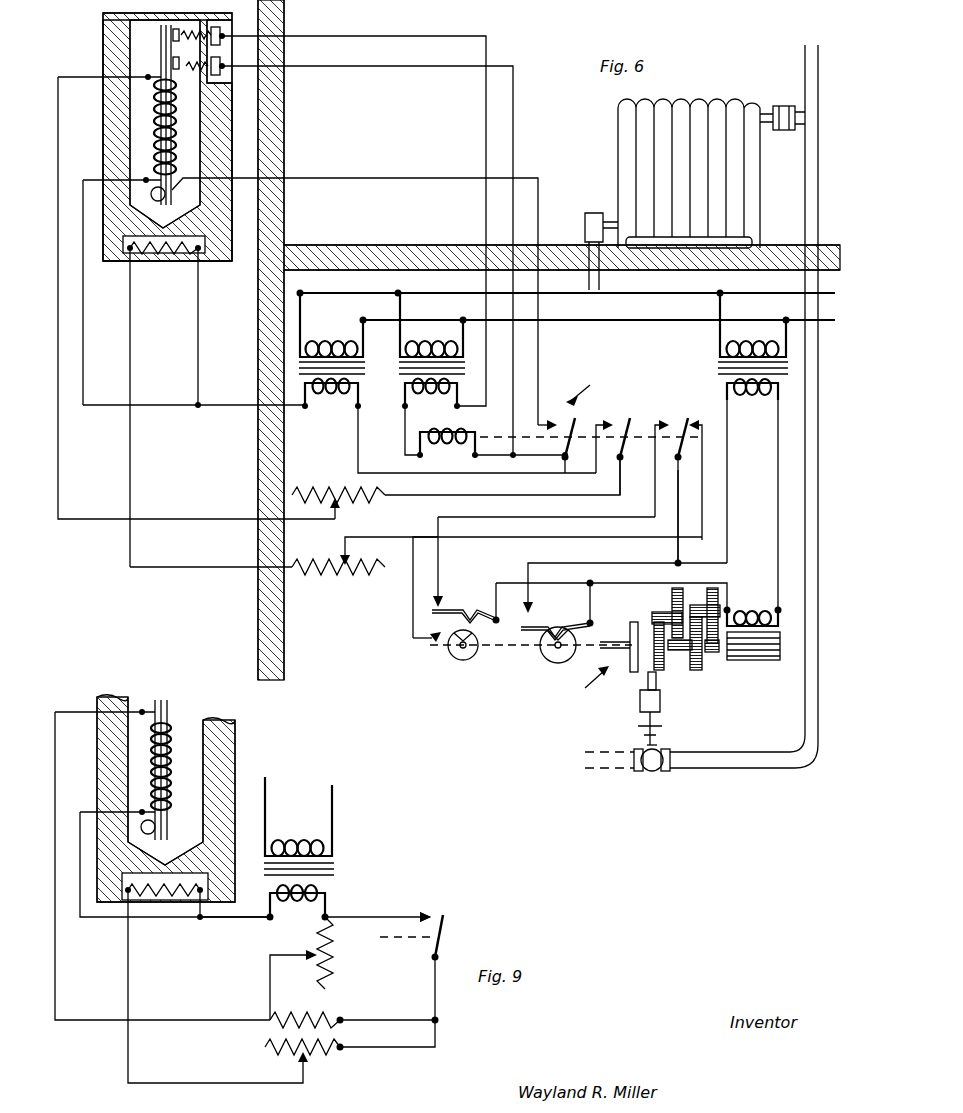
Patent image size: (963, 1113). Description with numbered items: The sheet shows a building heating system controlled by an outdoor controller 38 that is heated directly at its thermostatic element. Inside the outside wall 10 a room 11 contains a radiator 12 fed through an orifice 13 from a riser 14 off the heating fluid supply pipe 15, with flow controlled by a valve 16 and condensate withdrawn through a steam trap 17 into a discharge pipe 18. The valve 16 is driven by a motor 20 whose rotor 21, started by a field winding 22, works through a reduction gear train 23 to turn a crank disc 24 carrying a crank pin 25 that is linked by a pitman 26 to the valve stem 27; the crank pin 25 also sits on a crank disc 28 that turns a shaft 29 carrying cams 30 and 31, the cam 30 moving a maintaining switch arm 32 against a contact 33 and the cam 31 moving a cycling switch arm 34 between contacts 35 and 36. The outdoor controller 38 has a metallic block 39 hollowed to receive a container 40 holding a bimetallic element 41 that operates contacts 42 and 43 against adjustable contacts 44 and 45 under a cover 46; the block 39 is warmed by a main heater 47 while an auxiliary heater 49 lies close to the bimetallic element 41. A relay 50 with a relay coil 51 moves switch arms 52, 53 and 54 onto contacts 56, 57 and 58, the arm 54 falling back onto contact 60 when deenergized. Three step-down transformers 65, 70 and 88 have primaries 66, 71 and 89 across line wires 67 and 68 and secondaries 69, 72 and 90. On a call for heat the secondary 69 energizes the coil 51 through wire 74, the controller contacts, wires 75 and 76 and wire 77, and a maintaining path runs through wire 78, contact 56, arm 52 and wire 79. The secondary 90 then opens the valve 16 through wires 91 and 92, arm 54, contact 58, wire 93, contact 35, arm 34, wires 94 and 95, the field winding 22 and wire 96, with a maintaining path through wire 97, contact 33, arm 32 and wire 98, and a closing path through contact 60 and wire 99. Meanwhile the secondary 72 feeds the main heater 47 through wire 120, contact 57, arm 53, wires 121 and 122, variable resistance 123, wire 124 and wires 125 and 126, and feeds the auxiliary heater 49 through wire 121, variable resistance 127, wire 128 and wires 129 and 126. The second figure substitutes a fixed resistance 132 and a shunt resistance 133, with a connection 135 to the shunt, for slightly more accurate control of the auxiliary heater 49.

In FIG. 6, the outside wall 10 is at (260, 460).
In FIG. 6, the room 11 is at (574, 109).
In FIG. 6, the radiator 12 is at (618, 152).
In FIG. 6, the orifice 13 is at (786, 100).
In FIG. 6, the riser 14 is at (806, 192).
In FIG. 6, the heating fluid supply pipe 15 is at (606, 747).
In FIG. 6, the valve 16 is at (634, 752).
In FIG. 6, the steam trap 17 is at (594, 212).
In FIG. 6, the discharge pipe 18 is at (589, 250).
In FIG. 6, the motor 20 is at (583, 683).
In FIG. 6, the rotor 21 is at (752, 660).
In FIG. 6, the field winding 22 is at (754, 610).
In FIG. 6, the reduction gear train 23 is at (700, 670).
In FIG. 6, the crank disc 24 is at (660, 670).
In FIG. 6, the crank pin 25 is at (648, 682).
In FIG. 6, the pitman 26 is at (640, 700).
In FIG. 6, the valve stem 27 is at (662, 726).
In FIG. 6, the crank disc 28 is at (636, 622).
In FIG. 6, the shaft 29 is at (626, 640).
In FIG. 6, the cam 30 is at (544, 660).
In FIG. 6, the cam 31 is at (460, 660).
In FIG. 6, the switch arm 32 is at (550, 627).
In FIG. 6, the contact 33 is at (532, 620).
In FIG. 6, the switch arm 34 is at (458, 610).
In FIG. 6, the contact 35 is at (442, 602).
In FIG. 6, the contact 36 is at (427, 627).
In FIG. 6, the outdoor controller 38 is at (118, 265).
In FIG. 6, the metallic block 39 is at (222, 245).
In FIG. 9, the metallic block 39 is at (226, 764).
In FIG. 6, the container 40 is at (130, 146).
In FIG. 6, the bimetallic element 41 is at (162, 82).
In FIG. 9, the bimetallic element 41 is at (168, 702).
In FIG. 6, the contact 42 is at (173, 36).
In FIG. 6, the contact 43 is at (173, 63).
In FIG. 6, the contact 44 is at (222, 28).
In FIG. 6, the contact 45 is at (222, 58).
In FIG. 6, the cover 46 is at (108, 14).
In FIG. 6, the heater 47 is at (166, 253).
In FIG. 9, the heater 47 is at (164, 898).
In FIG. 6, the auxiliary heater 49 is at (178, 126).
In FIG. 9, the auxiliary heater 49 is at (150, 772).
In FIG. 6, the relay 50 is at (590, 403).
In FIG. 6, the relay coil 51 is at (448, 446).
In FIG. 6, the switch arm 52 is at (570, 452).
In FIG. 6, the switch arm 53 is at (624, 452).
In FIG. 9, the switch arm 53 is at (444, 918).
In FIG. 6, the switch arm 54 is at (682, 452).
In FIG. 6, the contact 56 is at (574, 420).
In FIG. 6, the contact 57 is at (606, 421).
In FIG. 9, the contact 57 is at (428, 910).
In FIG. 6, the contact 58 is at (662, 422).
In FIG. 6, the contact 60 is at (696, 420).
In FIG. 6, the step-down transformer 65 is at (392, 372).
In FIG. 6, the primary 66 is at (432, 340).
In FIG. 6, the line wire 67 is at (630, 297).
In FIG. 6, the line wire 68 is at (612, 323).
In FIG. 6, the secondary 69 is at (432, 392).
In FIG. 6, the step-down transformer 70 is at (282, 366).
In FIG. 9, the step-down transformer 70 is at (338, 868).
In FIG. 6, the primary 71 is at (334, 340).
In FIG. 9, the primary 71 is at (298, 840).
In FIG. 6, the secondary 72 is at (328, 392).
In FIG. 9, the secondary 72 is at (302, 902).
In FIG. 6, the wire 74 is at (486, 208).
In FIG. 6, the wire 75 is at (513, 150).
In FIG. 6, the wire 76 is at (500, 456).
In FIG. 6, the wire 77 is at (405, 438).
In FIG. 6, the wire 78 is at (538, 212).
In FIG. 6, the wire 79 is at (545, 456).
In FIG. 6, the step-down transformer 88 is at (712, 368).
In FIG. 6, the primary 89 is at (752, 340).
In FIG. 6, the secondary 90 is at (754, 394).
In FIG. 6, the wire 91 is at (727, 466).
In FIG. 6, the wire 92 is at (676, 520).
In FIG. 6, the wire 93 is at (528, 517).
In FIG. 6, the wire 94 is at (552, 583).
In FIG. 6, the wire 95 is at (616, 583).
In FIG. 6, the wire 96 is at (778, 548).
In FIG. 6, the wire 97 is at (596, 563).
In FIG. 6, the wire 98 is at (592, 608).
In FIG. 6, the wire 99 is at (678, 512).
In FIG. 6, the wire 120 is at (358, 450).
In FIG. 9, the wire 120 is at (352, 916).
In FIG. 6, the wire 121 is at (526, 496).
In FIG. 9, the wire 121 is at (434, 986).
In FIG. 6, the wire 122 is at (436, 534).
In FIG. 9, the wire 122 is at (404, 1048).
In FIG. 6, the variable resistance 123 is at (343, 570).
In FIG. 9, the variable resistance 123 is at (292, 1056).
In FIG. 6, the wire 124 is at (130, 462).
In FIG. 9, the wire 124 is at (206, 1083).
In FIG. 6, the wire 125 is at (198, 322).
In FIG. 9, the wire 125 is at (214, 910).
In FIG. 6, the wire 126 is at (226, 405).
In FIG. 9, the wire 126 is at (232, 918).
In FIG. 6, the variable resistance 127 is at (336, 490).
In FIG. 6, the wire 128 is at (190, 519).
In FIG. 9, the wire 128 is at (198, 1018).
In FIG. 6, the wire 129 is at (83, 362).
In FIG. 9, the wire 129 is at (100, 917).
In FIG. 9, the fixed resistance 132 is at (306, 1014).
In FIG. 9, the shunt resistance 133 is at (334, 970).
In FIG. 9, the conductor 135 is at (270, 982).